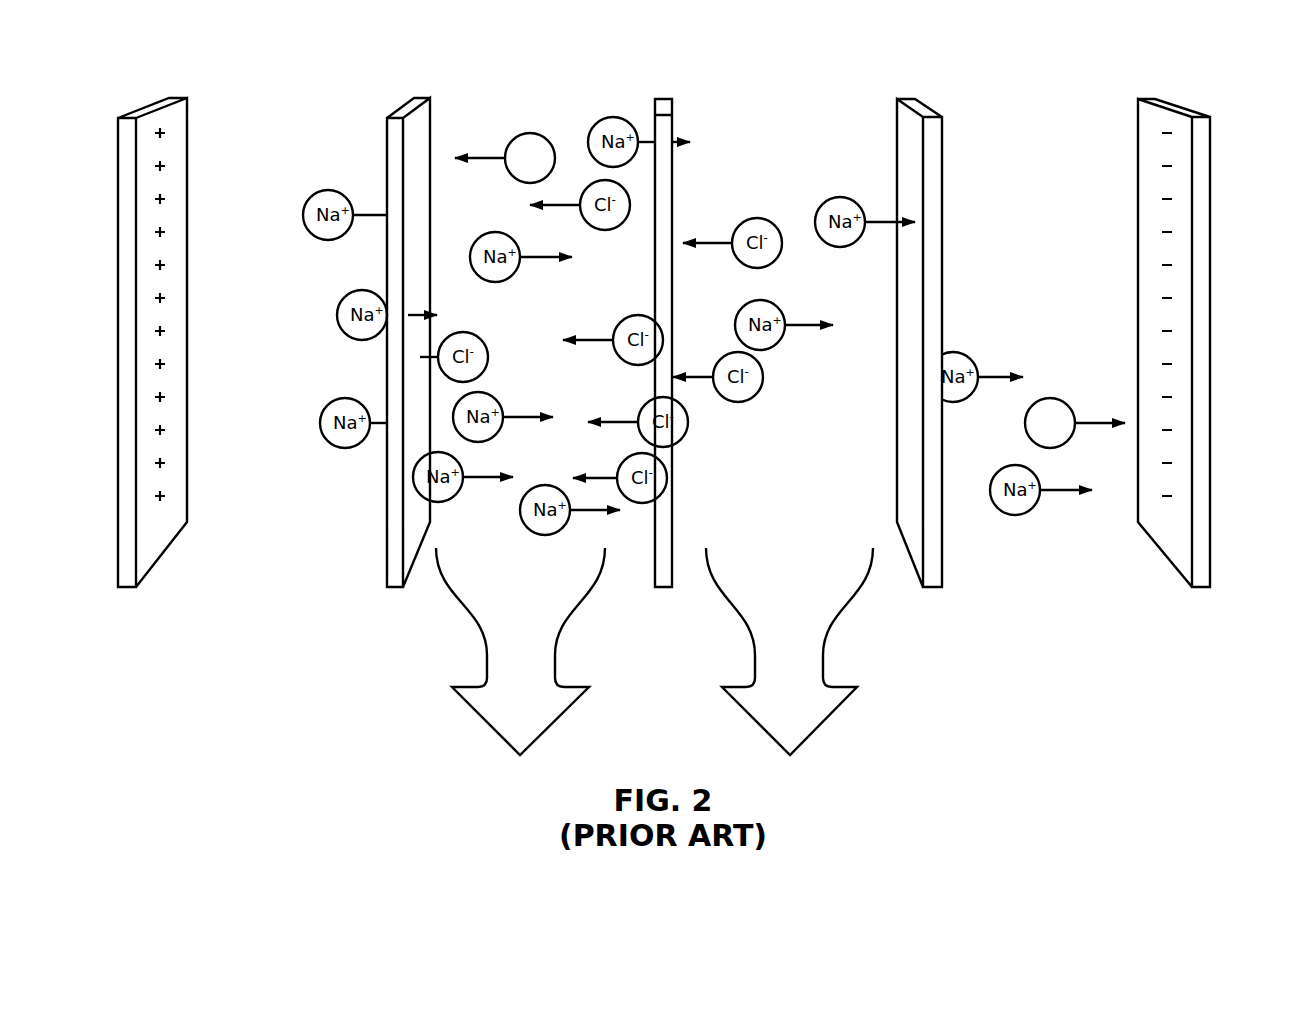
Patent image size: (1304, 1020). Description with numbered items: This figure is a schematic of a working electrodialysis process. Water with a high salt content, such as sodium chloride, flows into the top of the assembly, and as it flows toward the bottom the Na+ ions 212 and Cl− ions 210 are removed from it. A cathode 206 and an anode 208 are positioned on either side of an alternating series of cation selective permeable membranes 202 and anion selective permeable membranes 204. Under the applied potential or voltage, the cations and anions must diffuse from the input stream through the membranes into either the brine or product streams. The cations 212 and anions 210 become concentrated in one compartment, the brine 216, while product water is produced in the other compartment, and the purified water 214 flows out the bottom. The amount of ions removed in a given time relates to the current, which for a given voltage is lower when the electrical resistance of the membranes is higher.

The cation selective permeable membrane 202 is at (665, 168).
The anion selective permeable membrane 204 is at (397, 168).
The cathode 206 is at (1151, 297).
The anode 208 is at (172, 302).
The Cl− ion 210 is at (530, 133).
The Na+ ion 212 is at (1052, 398).
The purified water 214 is at (789, 651).
The brine compartment 216 is at (520, 651).